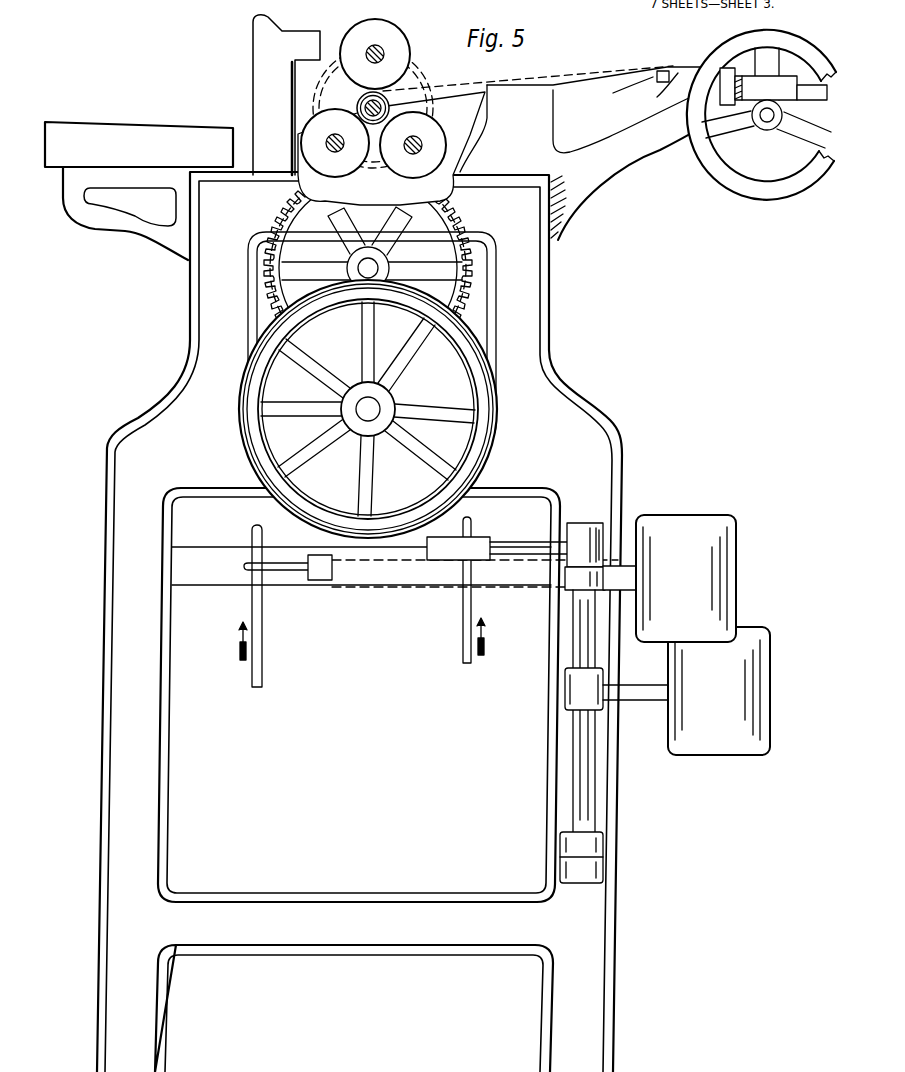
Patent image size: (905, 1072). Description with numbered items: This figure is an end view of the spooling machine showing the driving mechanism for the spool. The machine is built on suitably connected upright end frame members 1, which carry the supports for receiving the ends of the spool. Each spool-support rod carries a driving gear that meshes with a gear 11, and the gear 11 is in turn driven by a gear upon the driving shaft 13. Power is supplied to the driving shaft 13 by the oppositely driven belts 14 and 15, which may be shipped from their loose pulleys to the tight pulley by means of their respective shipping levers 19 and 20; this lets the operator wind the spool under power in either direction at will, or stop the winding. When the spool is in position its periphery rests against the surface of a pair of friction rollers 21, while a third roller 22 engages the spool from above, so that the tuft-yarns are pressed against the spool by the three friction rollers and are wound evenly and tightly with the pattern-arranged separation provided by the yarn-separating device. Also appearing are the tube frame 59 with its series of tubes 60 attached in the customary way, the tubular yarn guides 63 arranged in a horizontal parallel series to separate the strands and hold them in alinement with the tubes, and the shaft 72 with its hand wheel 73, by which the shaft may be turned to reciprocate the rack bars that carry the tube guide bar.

The upright end frame member 1 is at (147, 710).
The gear 11 is at (468, 275).
The driving shaft 13 is at (371, 411).
The belt 14 is at (262, 663).
The belt 15 is at (460, 632).
The shipping lever 19 is at (287, 567).
The shipping lever 20 is at (465, 548).
The friction roller 21 is at (312, 143).
The third roller 22 is at (390, 43).
The tube frame 59 is at (657, 82).
The tube 60 is at (653, 96).
The tubular yarn guide 63 is at (663, 70).
The shaft 72 is at (768, 118).
The hand wheel 73 is at (747, 185).